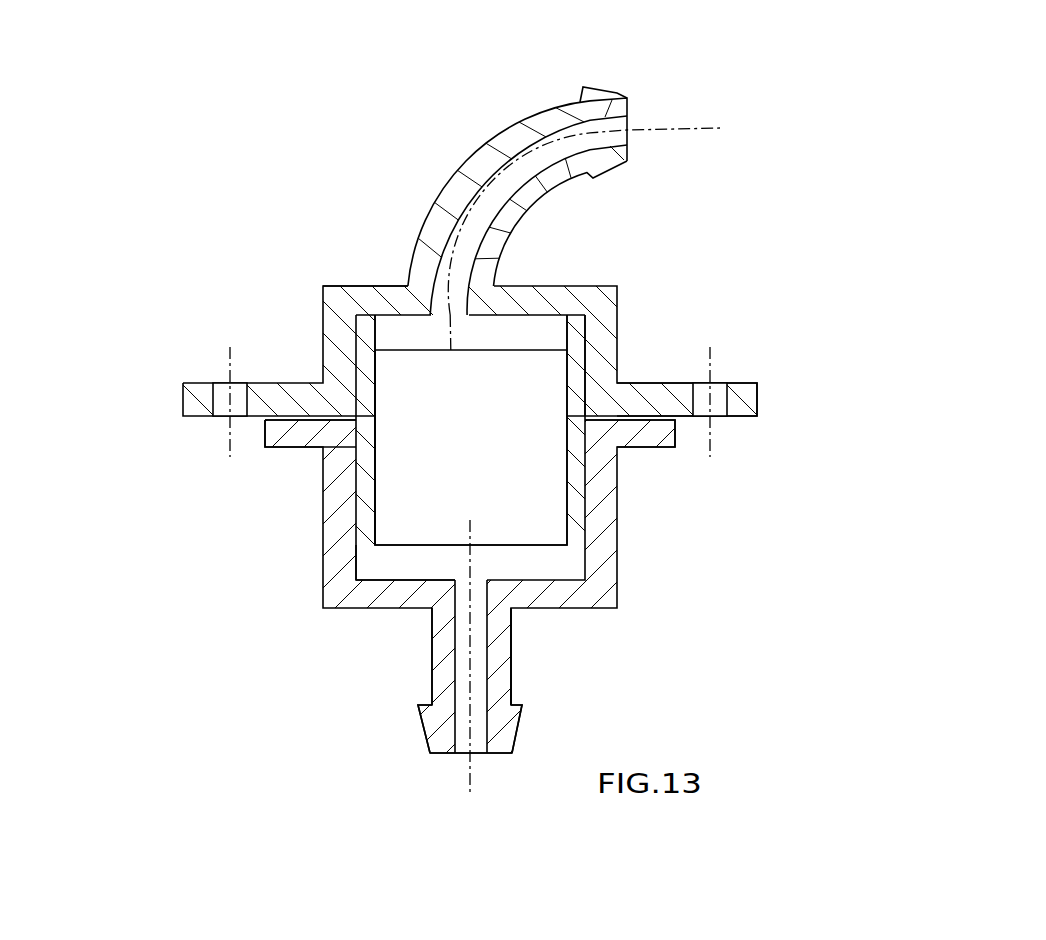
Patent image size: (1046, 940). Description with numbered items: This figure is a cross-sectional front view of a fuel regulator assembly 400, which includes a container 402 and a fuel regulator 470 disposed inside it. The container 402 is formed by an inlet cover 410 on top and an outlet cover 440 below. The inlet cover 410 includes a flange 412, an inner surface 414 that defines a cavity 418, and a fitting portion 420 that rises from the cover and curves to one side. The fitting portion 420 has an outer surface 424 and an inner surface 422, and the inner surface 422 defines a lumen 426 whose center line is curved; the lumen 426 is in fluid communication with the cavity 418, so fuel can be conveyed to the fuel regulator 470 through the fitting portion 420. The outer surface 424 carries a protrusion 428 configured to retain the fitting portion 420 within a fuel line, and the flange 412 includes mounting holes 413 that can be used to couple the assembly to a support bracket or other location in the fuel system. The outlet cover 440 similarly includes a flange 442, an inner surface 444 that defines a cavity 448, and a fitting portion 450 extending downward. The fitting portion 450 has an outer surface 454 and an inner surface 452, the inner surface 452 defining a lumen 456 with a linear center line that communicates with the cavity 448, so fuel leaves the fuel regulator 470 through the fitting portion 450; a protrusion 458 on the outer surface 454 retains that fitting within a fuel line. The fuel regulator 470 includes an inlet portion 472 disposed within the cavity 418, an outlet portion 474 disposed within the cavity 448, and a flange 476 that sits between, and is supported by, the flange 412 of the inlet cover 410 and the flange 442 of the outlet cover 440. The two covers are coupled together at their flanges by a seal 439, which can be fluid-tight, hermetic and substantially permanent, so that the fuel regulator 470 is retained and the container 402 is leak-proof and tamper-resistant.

The fuel regulator assembly 400 is at (208, 138).
The container 402 is at (327, 282).
The inlet cover 410 is at (352, 292).
The flange 412 is at (684, 383).
The mounting holes 413 is at (225, 383).
The inner surface 414 is at (610, 330).
The cavity 418 is at (537, 332).
The fitting portion 420 is at (448, 190).
The inner surface 422 is at (473, 245).
The outer surface 424 is at (487, 143).
The lumen 426 is at (495, 181).
The protrusion 428 is at (603, 88).
The seal 439 is at (305, 443).
The outlet cover 440 is at (613, 575).
The flange 442 is at (655, 440).
The inner surface 444 is at (357, 537).
The cavity 448 is at (398, 567).
The fitting portion 450 is at (510, 683).
The inner surface 452 is at (478, 720).
The outer surface 454 is at (512, 647).
The lumen 456 is at (463, 740).
The protrusion 458 is at (424, 706).
The fuel regulator 470 is at (510, 502).
The inlet portion 472 is at (387, 370).
The outlet portion 474 is at (390, 508).
The flange 476 is at (327, 443).